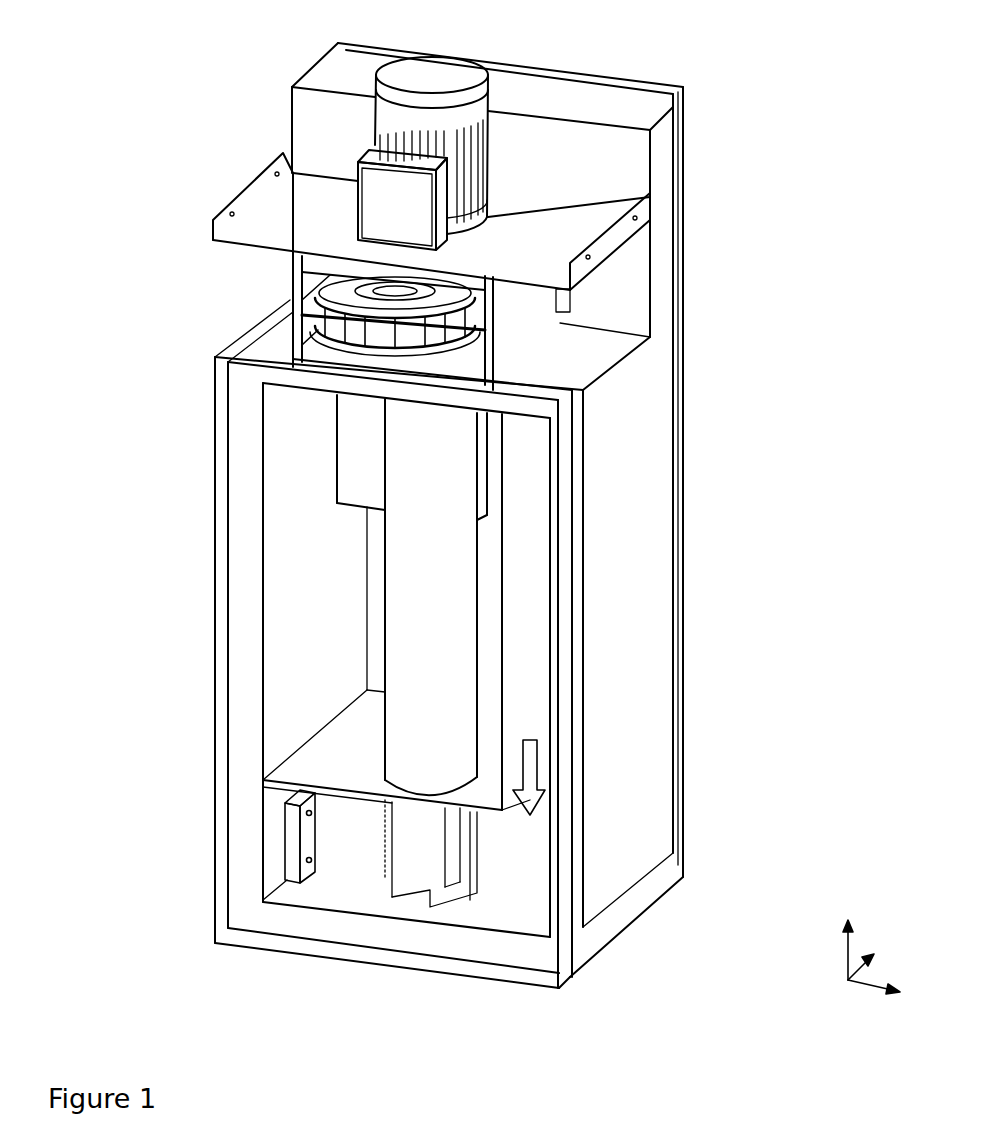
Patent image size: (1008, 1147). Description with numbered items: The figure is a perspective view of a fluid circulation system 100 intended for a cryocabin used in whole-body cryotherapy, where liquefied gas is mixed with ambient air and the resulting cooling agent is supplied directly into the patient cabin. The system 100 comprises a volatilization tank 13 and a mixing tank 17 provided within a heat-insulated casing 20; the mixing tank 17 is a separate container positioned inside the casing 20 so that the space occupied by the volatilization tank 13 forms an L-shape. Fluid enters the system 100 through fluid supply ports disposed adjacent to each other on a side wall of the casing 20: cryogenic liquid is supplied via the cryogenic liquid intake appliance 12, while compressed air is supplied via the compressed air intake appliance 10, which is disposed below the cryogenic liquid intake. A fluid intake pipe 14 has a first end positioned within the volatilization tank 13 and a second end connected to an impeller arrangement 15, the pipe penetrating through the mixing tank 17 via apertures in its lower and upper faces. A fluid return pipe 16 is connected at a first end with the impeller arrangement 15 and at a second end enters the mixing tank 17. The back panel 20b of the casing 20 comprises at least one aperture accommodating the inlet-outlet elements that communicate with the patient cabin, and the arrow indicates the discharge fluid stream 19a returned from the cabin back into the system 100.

The fluid circulation system 100 is at (76, 34).
The compressed air intake appliance 10 is at (151, 857).
The cryogenic liquid intake appliance 12 is at (164, 822).
The volatilization tank 13 is at (615, 897).
The fluid intake pipe 14 is at (297, 653).
The impeller arrangement 15 is at (393, 223).
The fluid return pipe 16 is at (251, 431).
The mixing tank 17 is at (290, 611).
The discharge fluid stream 19a is at (642, 709).
The casing 20 is at (365, 644).
The back panel 20b is at (549, 460).